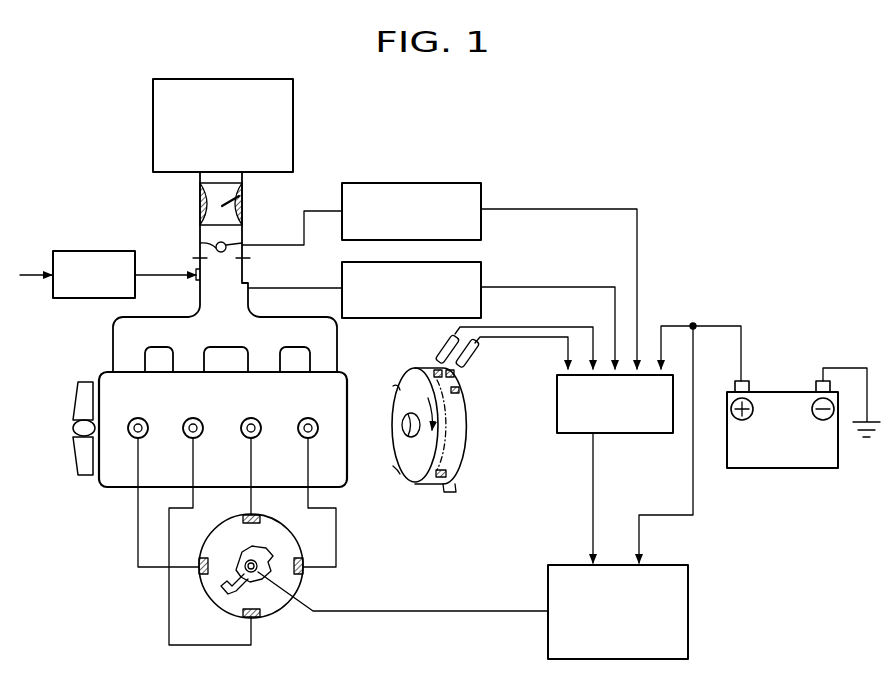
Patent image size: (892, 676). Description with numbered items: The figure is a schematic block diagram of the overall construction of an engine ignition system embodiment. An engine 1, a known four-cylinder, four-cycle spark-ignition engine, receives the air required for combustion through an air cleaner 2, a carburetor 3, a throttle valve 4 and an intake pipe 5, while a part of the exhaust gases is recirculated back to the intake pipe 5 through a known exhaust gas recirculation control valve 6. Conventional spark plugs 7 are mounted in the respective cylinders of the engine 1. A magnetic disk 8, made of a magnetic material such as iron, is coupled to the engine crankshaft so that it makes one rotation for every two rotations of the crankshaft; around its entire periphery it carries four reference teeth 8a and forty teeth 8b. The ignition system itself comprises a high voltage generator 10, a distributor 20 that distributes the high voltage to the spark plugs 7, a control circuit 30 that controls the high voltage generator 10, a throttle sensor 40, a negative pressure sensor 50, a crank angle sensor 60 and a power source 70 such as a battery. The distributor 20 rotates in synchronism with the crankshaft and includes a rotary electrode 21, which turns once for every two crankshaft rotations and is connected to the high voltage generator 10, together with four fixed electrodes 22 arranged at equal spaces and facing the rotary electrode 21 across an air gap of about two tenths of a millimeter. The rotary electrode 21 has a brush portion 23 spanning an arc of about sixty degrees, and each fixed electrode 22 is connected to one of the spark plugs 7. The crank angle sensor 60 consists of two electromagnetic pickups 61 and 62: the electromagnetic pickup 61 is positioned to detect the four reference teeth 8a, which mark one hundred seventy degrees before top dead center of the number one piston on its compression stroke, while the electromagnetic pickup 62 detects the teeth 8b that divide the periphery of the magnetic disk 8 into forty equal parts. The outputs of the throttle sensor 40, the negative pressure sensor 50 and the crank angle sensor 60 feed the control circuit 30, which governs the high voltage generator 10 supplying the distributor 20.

The engine 1 is at (112, 489).
The air cleaner 2 is at (152, 125).
The carburetor 3 is at (200, 205).
The throttle valve 4 is at (207, 247).
The intake pipe 5 is at (113, 343).
The exhaust gas recirculation (EGR) control valve 6 is at (105, 251).
The spark plugs 7 is at (186, 418).
The magnetic disk 8 is at (438, 444).
The reference teeth 8a is at (433, 371).
The teeth 8b is at (460, 378).
The high voltage generator 10 is at (548, 583).
The distributor 20 is at (241, 567).
The rotary electrode 21 is at (228, 560).
The fixed electrodes 22 is at (247, 515).
The brush portion 23 is at (224, 593).
The control circuit 30 is at (645, 433).
The throttle sensor 40 is at (417, 183).
The negative pressure sensor 50 is at (481, 275).
The crank angle sensor 60 is at (475, 346).
The electromagnetic pickup 61 is at (437, 347).
The electromagnetic pickup 62 is at (478, 350).
The power source 70 is at (782, 468).